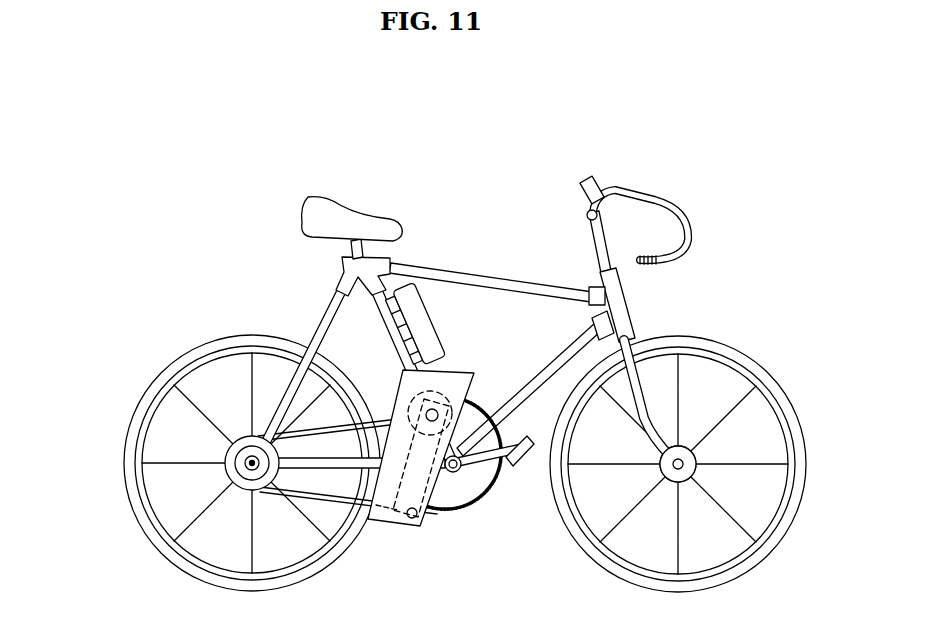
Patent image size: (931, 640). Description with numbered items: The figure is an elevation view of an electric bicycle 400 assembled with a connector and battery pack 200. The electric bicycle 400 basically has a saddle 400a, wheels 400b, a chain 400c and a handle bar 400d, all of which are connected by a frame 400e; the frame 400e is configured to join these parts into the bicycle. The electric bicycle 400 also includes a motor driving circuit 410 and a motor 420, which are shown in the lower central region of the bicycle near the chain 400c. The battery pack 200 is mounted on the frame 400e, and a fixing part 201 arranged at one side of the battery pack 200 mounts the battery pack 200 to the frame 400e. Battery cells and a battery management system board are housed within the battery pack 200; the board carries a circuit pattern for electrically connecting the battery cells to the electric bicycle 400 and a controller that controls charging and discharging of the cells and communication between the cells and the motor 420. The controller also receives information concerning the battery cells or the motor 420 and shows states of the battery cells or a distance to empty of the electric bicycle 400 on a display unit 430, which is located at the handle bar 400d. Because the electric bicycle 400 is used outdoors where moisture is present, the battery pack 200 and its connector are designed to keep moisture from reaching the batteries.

The electric bicycle 400 is at (770, 168).
The saddle 400a is at (358, 218).
The wheels 400b is at (130, 490).
The chain 400c is at (435, 510).
The handle bar 400d is at (653, 203).
The frame 400e is at (348, 317).
The battery pack 200 is at (432, 323).
The fixing part 201 is at (398, 296).
The motor driving circuit 410 is at (387, 530).
The motor 420 is at (500, 472).
The display unit 430 is at (590, 185).